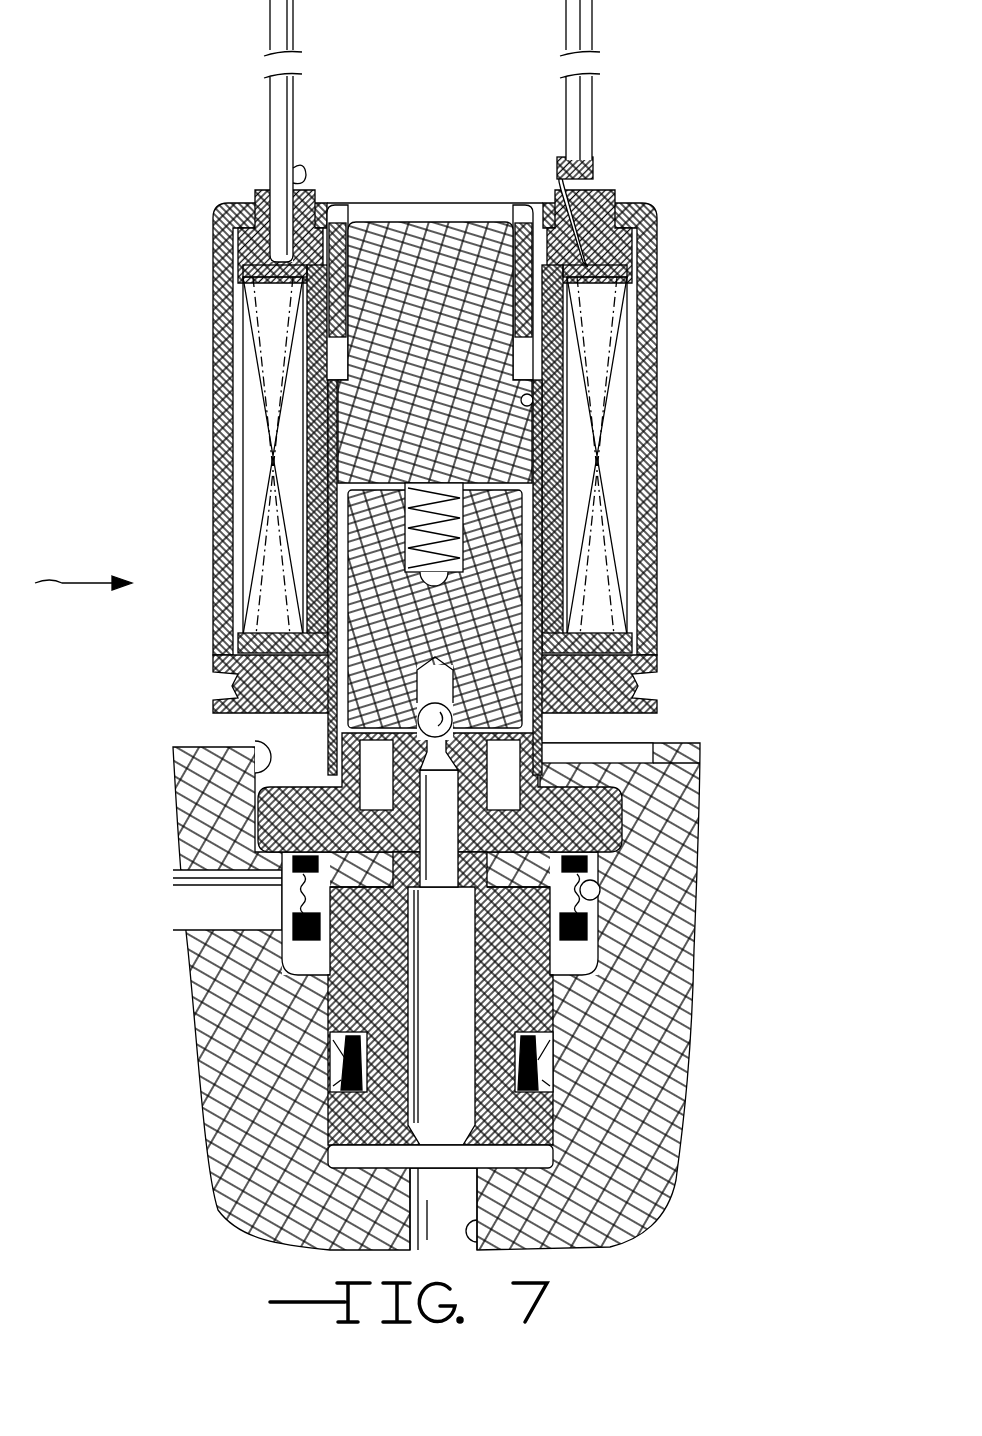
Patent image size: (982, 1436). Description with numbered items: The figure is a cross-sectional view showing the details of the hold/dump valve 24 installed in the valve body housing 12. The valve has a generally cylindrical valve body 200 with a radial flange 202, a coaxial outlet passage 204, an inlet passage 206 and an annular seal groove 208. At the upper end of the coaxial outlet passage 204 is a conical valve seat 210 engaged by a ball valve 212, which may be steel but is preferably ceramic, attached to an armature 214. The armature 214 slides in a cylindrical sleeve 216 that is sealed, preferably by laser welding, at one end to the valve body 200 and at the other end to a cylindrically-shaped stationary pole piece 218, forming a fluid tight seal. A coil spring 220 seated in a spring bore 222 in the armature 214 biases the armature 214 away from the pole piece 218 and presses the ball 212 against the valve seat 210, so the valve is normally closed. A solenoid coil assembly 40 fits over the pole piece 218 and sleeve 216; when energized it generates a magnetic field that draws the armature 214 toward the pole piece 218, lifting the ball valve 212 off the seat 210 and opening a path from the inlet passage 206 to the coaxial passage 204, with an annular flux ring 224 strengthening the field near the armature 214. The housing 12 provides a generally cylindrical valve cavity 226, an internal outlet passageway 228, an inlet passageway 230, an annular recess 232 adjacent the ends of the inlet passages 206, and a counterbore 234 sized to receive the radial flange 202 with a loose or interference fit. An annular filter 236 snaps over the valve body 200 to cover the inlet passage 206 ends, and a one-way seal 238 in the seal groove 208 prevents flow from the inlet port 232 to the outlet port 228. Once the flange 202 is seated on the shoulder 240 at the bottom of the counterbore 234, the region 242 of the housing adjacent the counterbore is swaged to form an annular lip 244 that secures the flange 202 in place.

The valve body housing 12 is at (215, 1150).
The hold/dump valve 24 is at (76, 608).
The solenoid coil assembly 40 is at (213, 428).
The valve body 200 is at (560, 1003).
The radial flange 202 is at (623, 807).
The coaxial outlet passage 204 is at (420, 978).
The inlet passage 206 is at (530, 833).
The annular seal groove 208 is at (545, 1085).
The conical valve seat 210 is at (522, 745).
The ball valve 212 is at (418, 718).
The armature 214 is at (517, 505).
The cylindrical sleeve 216 is at (532, 402).
The stationary pole piece 218 is at (433, 203).
The coil spring 220 is at (410, 504).
The spring bore 222 is at (413, 537).
The annular flux ring 224 is at (590, 637).
The valve cavity 226 is at (553, 1130).
The internal outlet passageway 228 is at (472, 1228).
The inlet passageway 230 is at (195, 925).
The annular recess 232 is at (600, 893).
The counterbore 234 is at (268, 742).
The annular filter 236 is at (300, 890).
The one-way seal 238 is at (330, 1075).
The shoulder 240 is at (292, 862).
The region 242 is at (638, 772).
The annular lip 244 is at (600, 743).